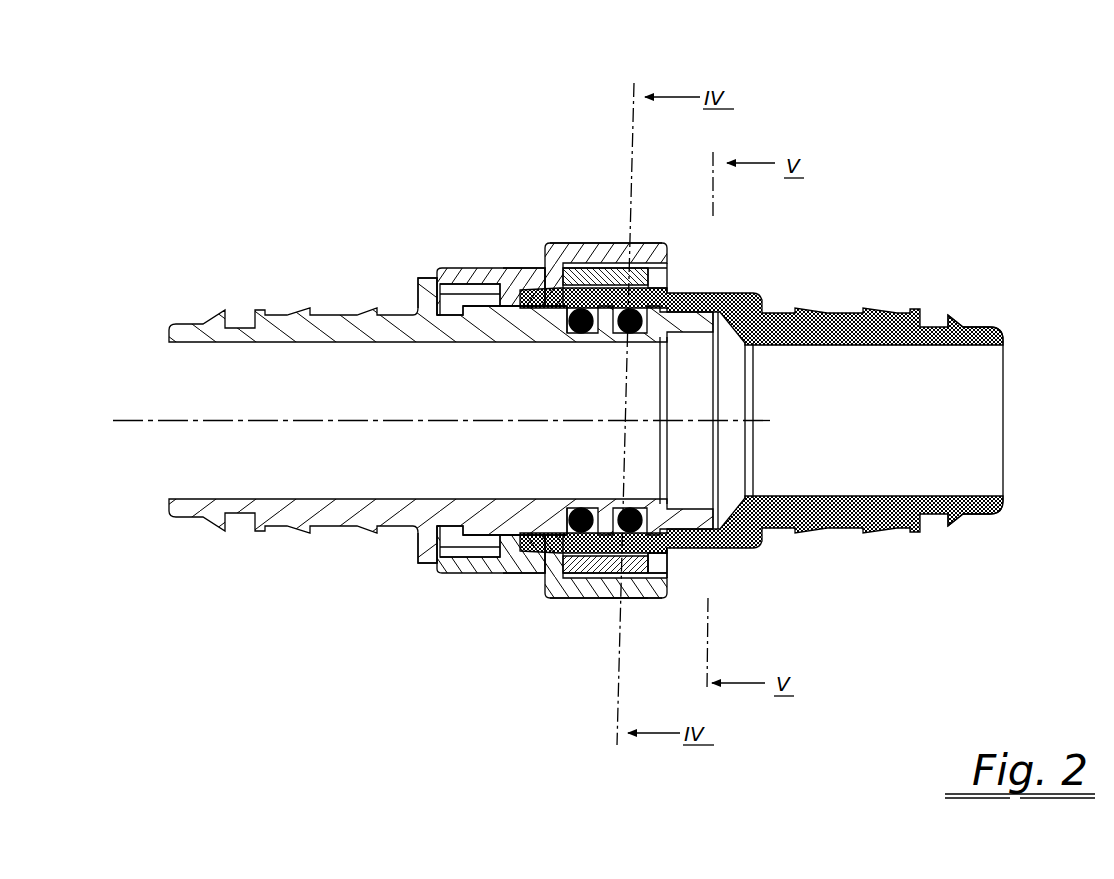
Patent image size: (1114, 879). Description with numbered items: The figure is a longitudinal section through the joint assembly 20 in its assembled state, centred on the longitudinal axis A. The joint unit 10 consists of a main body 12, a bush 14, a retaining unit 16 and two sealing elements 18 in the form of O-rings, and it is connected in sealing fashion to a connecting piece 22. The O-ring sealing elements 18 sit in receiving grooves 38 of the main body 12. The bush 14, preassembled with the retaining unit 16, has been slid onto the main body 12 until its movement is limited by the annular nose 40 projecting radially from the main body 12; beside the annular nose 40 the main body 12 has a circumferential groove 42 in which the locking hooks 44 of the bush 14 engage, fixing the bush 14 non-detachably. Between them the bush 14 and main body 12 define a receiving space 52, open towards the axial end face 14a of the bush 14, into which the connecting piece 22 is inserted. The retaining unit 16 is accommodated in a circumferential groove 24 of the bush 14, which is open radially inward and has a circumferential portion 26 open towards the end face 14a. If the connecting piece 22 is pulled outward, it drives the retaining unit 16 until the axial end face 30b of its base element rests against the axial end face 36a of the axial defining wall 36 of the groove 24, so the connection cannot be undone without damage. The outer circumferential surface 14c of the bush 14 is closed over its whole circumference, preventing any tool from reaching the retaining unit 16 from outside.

The joint unit 10 is at (195, 160).
The main body 12 is at (190, 507).
The bush 14 is at (462, 448).
The axial end face of the bush 14a is at (668, 572).
The outer circumferential surface of the bush 14c is at (495, 578).
The retaining unit 16 is at (665, 426).
The sealing elements 18 is at (578, 333).
The joint assembly 20 is at (808, 297).
The connecting piece 22 is at (983, 327).
The circumferential groove of the bush 24 is at (567, 250).
The circumferential portion 26 is at (668, 278).
The axial end face of the base element 30b is at (668, 262).
The axial defining wall 36 is at (663, 590).
The axial end face of the axial defining wall 36a is at (630, 602).
The receiving grooves 38 is at (540, 325).
The annular nose 40 is at (420, 292).
The circumferential groove of the main body 42 is at (443, 318).
The locking hooks 44 is at (462, 298).
The receiving space 52 is at (478, 330).
The longitudinal axis A is at (125, 420).